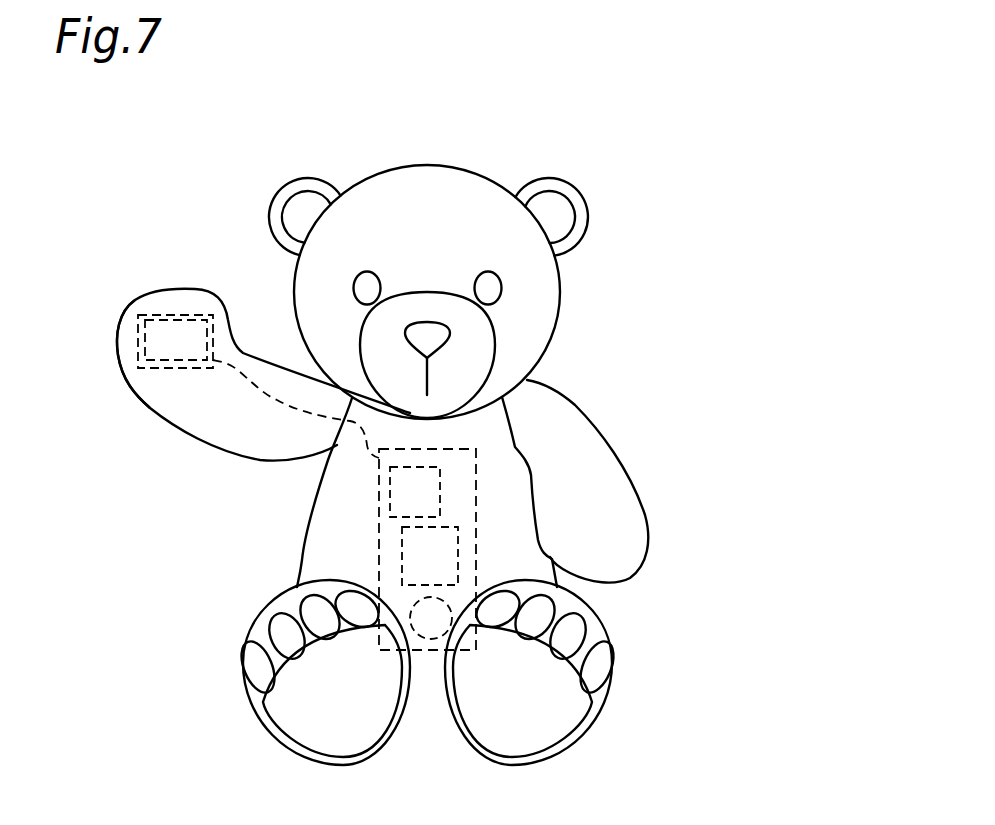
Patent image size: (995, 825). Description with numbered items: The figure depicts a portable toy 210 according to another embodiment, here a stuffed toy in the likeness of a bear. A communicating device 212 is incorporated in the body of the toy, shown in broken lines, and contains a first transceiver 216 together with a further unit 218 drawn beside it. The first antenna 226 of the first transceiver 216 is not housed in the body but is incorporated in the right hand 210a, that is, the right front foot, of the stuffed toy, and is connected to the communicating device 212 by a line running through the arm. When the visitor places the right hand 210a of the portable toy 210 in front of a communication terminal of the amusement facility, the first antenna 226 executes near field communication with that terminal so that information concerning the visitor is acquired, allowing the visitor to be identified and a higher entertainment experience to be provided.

The portable toy 210 is at (603, 171).
The right hand 210a is at (128, 333).
The first antenna 226 is at (162, 317).
The communicating device 212 is at (385, 548).
The first transceiver 216 is at (397, 497).
The communication unit / battery 218 is at (440, 558).